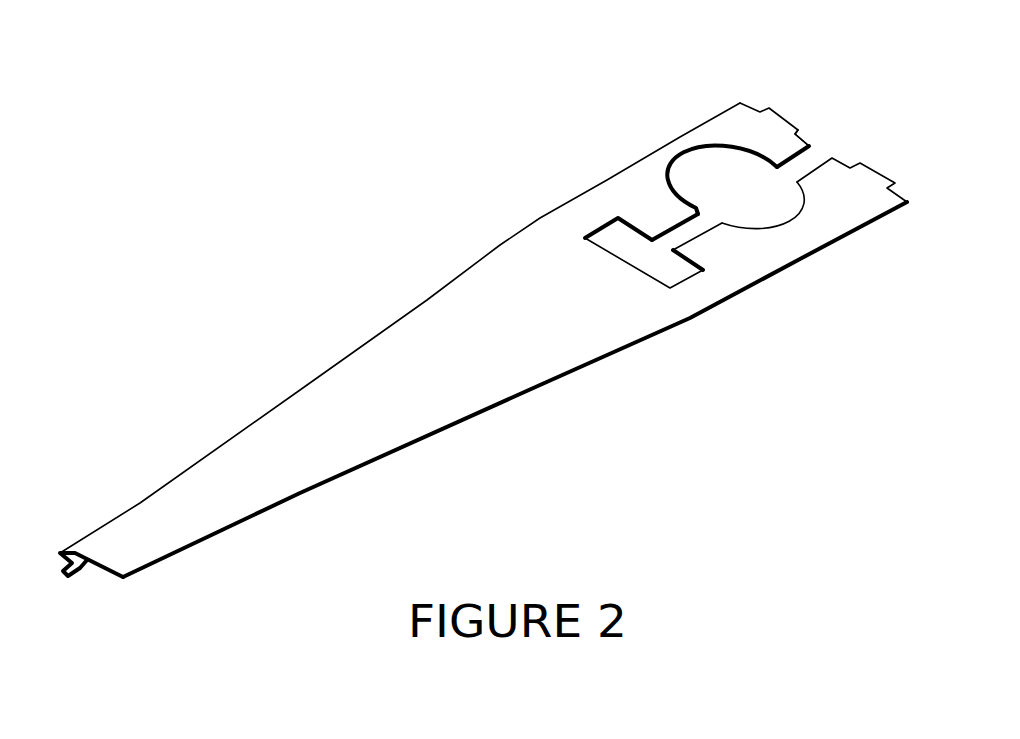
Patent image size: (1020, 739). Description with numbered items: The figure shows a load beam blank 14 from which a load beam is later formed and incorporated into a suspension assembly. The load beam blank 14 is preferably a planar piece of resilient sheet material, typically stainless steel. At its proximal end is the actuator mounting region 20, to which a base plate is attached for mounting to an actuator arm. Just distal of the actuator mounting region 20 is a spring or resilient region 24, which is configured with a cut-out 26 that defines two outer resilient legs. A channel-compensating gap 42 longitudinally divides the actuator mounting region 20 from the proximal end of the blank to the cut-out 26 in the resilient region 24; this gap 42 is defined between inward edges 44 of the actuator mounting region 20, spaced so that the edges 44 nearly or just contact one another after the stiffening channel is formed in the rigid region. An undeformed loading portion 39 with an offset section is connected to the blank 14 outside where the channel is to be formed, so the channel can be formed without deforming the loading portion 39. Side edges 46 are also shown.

The load beam blank 14 is at (483, 359).
The actuator mounting region 20 is at (765, 133).
The resilient region 24 is at (728, 308).
The cut-out 26 is at (600, 237).
The loading portion 39 is at (82, 570).
The channel-compensating gap 42 is at (801, 157).
The inward edges 44 is at (672, 227).
The side edge 46 is at (370, 340).